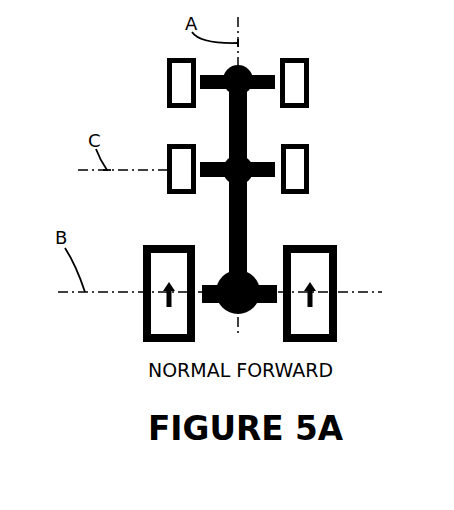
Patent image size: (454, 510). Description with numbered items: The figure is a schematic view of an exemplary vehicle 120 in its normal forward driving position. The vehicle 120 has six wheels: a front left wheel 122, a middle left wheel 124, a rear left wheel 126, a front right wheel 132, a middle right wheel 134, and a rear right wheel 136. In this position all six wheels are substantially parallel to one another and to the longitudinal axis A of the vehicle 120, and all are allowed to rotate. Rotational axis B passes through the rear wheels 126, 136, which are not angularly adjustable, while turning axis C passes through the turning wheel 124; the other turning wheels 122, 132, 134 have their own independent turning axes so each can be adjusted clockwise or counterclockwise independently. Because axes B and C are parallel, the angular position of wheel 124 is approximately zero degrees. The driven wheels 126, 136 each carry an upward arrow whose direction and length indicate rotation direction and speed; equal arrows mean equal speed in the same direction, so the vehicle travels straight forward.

The vehicle 120 is at (143, 362).
The front left wheel 122 is at (167, 83).
The middle left wheel 124 is at (167, 172).
The rear left wheel 126 is at (143, 300).
The front right wheel 132 is at (309, 88).
The middle right wheel 134 is at (309, 183).
The rear right wheel 136 is at (337, 305).